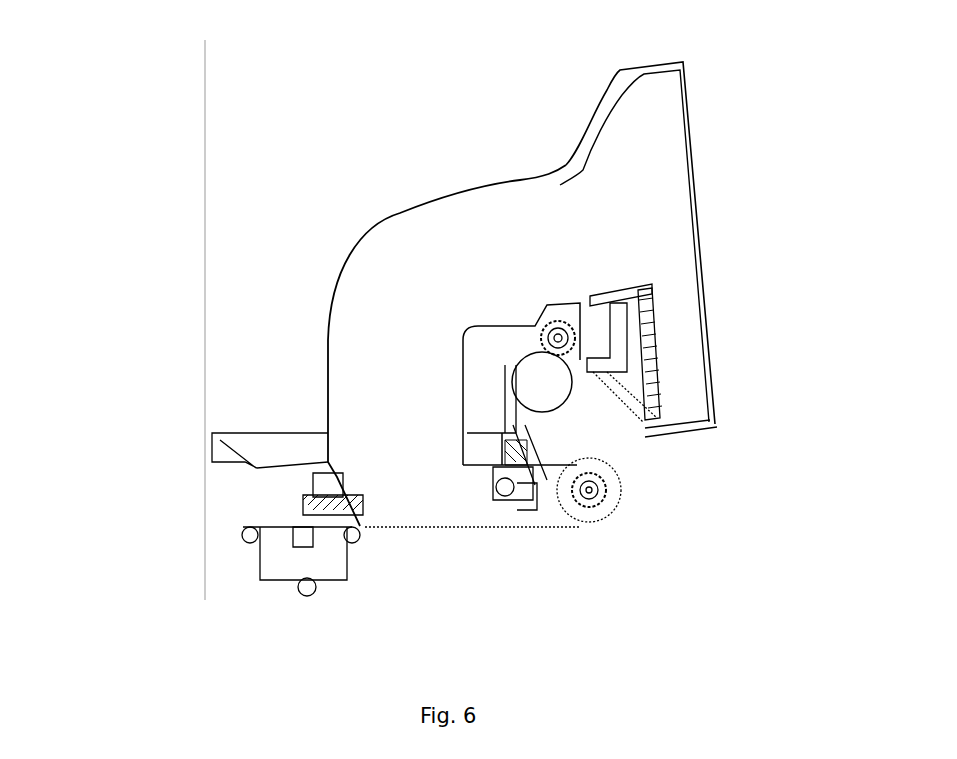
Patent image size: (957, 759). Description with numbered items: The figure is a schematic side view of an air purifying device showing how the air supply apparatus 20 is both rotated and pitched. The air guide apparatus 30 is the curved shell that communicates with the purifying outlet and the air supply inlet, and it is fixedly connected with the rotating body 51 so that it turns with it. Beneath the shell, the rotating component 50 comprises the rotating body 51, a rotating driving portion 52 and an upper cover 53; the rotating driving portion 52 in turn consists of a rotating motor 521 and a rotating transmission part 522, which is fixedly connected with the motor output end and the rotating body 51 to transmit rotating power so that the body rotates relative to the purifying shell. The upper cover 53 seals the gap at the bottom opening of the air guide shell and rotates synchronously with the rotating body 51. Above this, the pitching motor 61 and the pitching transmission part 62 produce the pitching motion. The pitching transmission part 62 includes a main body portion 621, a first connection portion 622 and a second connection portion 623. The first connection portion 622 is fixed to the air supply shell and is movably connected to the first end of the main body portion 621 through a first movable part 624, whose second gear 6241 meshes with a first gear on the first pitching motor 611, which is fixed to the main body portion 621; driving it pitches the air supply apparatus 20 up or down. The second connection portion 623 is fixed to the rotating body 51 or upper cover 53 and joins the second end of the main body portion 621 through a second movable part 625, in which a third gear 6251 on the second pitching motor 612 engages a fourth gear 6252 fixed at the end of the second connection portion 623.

The air supply apparatus 20 is at (595, 120).
The air guide apparatus 30 is at (462, 187).
The rotating component 50 is at (85, 425).
The rotating body 51 is at (323, 483).
The rotating driving portion 52 is at (135, 500).
The rotating motor 521 is at (322, 562).
The rotating transmission part 522 is at (323, 502).
The upper cover 53 is at (250, 462).
The pitching motor 61 is at (810, 413).
The first pitching motor 611 is at (555, 380).
The second pitching motor 612 is at (617, 471).
The pitching transmission part 62 is at (235, 181).
The main body portion 621 is at (540, 428).
The first connection portion 622 is at (590, 320).
The second connection portion 623 is at (545, 485).
The first movable part 624 is at (818, 325).
The second gear 6241 is at (573, 336).
The second movable part 625 is at (715, 547).
The third gear 6251 is at (600, 501).
The fourth gear 6252 is at (563, 487).